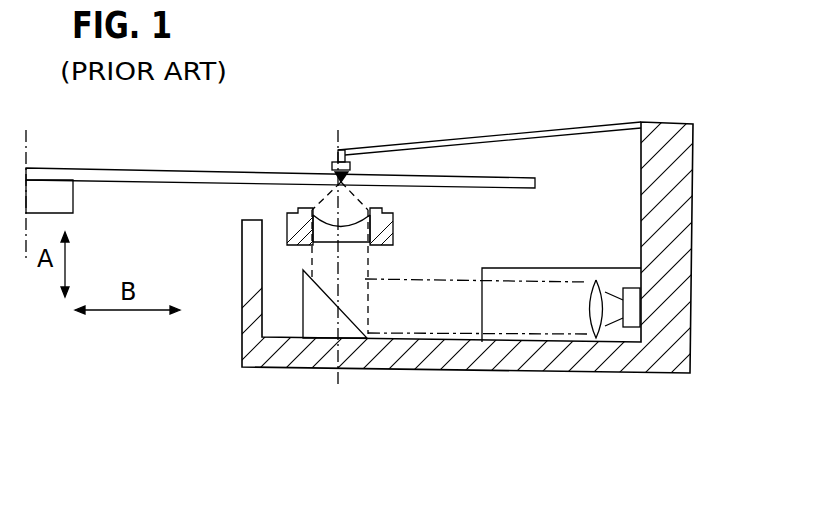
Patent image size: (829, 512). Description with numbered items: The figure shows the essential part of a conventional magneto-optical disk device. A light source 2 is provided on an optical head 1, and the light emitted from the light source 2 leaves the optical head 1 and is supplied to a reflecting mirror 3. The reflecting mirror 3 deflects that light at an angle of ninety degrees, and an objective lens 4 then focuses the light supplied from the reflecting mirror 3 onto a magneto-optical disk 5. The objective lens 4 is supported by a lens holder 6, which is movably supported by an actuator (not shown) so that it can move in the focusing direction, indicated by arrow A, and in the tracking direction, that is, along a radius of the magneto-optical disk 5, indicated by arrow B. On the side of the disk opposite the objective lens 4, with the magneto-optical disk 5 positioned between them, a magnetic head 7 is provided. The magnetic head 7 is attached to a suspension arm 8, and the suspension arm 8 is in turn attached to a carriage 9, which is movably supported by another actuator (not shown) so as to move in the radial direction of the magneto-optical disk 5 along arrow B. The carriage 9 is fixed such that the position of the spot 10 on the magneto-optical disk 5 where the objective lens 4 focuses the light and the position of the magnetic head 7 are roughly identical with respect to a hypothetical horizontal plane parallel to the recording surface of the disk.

The optical head 1 is at (573, 262).
The light source 2 is at (632, 308).
The reflecting mirror 3 is at (303, 312).
The objective lens 4 is at (327, 215).
The magneto-optical disk 5 is at (155, 178).
The lens holder 6 is at (393, 233).
The magnetic head 7 is at (332, 166).
The suspension arm 8 is at (518, 134).
The carriage 9 is at (680, 198).
The spot 10 is at (352, 172).